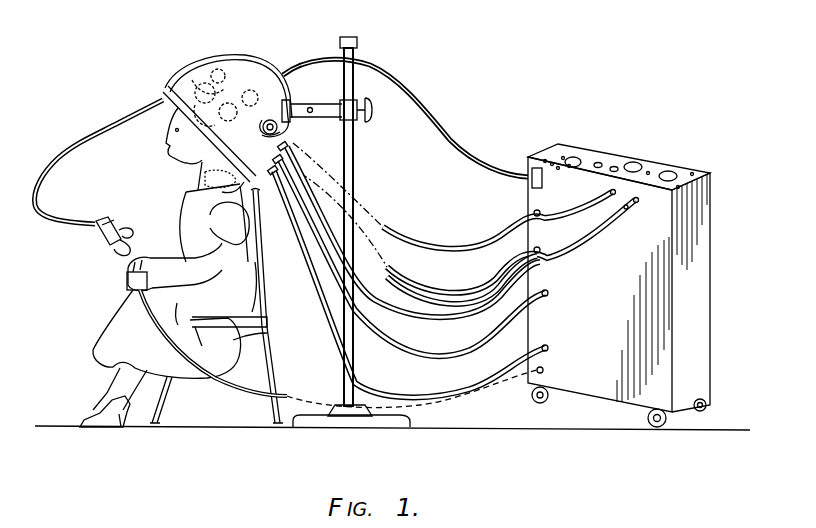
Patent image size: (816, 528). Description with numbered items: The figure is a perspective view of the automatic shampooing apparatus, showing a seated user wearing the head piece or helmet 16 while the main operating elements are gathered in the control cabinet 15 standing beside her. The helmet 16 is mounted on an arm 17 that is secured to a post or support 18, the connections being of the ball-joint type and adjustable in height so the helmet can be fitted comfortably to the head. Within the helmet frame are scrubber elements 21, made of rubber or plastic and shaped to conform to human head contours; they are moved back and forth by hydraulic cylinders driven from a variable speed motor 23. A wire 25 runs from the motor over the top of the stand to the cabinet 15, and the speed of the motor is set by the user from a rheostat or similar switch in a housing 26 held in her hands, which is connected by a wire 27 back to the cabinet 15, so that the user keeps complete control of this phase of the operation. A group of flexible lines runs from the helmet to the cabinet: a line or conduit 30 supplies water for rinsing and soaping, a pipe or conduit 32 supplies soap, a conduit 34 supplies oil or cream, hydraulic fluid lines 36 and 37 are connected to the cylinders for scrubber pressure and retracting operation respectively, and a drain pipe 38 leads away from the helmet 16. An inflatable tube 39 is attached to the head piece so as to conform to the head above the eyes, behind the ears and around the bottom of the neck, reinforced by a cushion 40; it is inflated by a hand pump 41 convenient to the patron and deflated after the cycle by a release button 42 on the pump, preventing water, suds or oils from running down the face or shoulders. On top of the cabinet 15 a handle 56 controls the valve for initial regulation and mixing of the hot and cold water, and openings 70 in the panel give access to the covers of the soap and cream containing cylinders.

The control cabinet 15 is at (655, 152).
The head piece or helmet 16 is at (240, 62).
The arm 17 is at (328, 115).
The post or support 18 is at (356, 160).
The scrubber elements 21 is at (192, 80).
The variable speed motor 23 is at (252, 83).
The wire 25 is at (438, 126).
The housing 26 is at (124, 284).
The wire 27 is at (229, 385).
The line or conduit 30 is at (378, 338).
The pipe or conduit 32 is at (557, 214).
The conduit 34 is at (596, 226).
The hydraulic fluid line 36 is at (436, 233).
The hydraulic fluid line 37 is at (473, 290).
The drain pipe 38 is at (524, 328).
The inflatable tube 39 is at (160, 97).
The cushion 40 is at (210, 173).
The hand pump 41 is at (100, 234).
The release button 42 is at (131, 252).
The handle 56 is at (580, 158).
The openings 70 is at (635, 162).